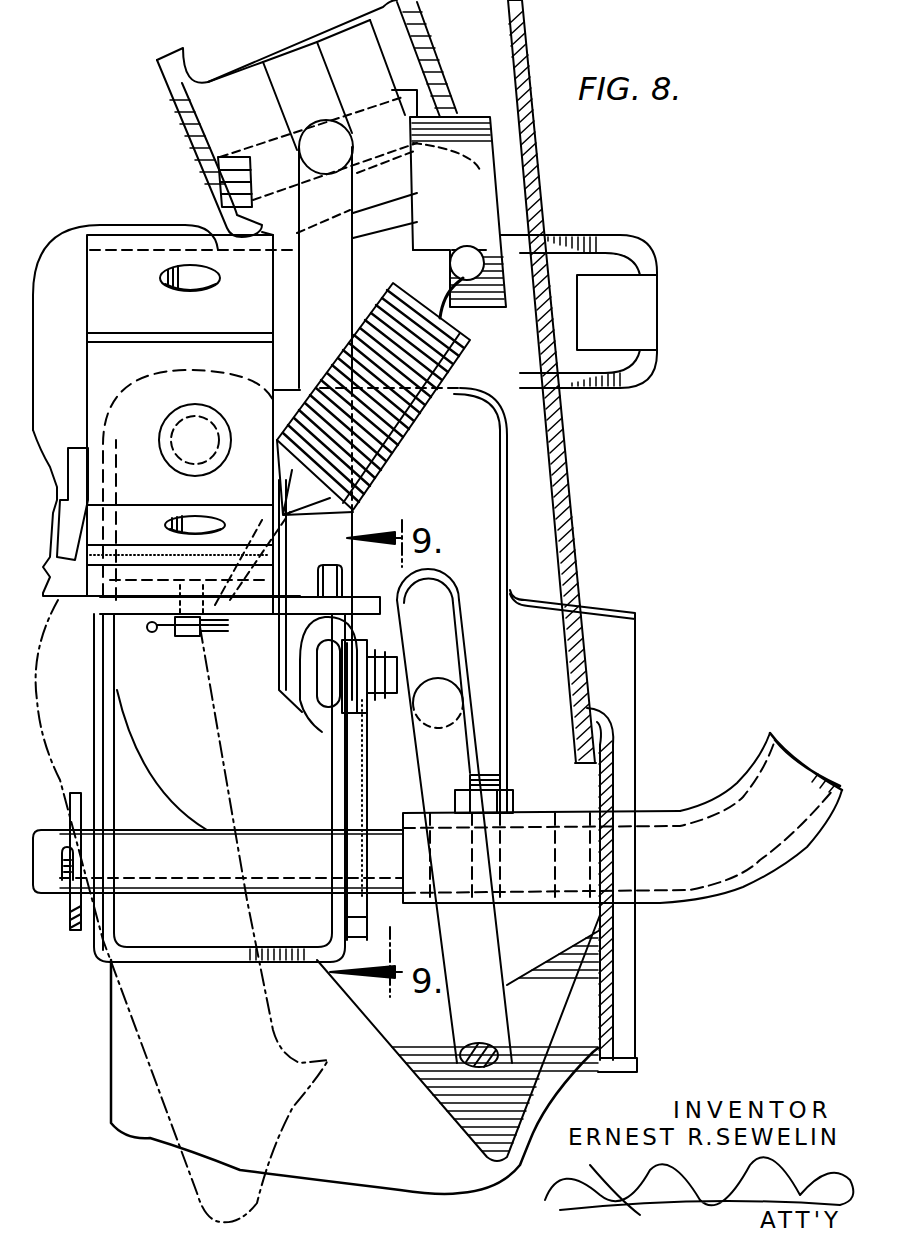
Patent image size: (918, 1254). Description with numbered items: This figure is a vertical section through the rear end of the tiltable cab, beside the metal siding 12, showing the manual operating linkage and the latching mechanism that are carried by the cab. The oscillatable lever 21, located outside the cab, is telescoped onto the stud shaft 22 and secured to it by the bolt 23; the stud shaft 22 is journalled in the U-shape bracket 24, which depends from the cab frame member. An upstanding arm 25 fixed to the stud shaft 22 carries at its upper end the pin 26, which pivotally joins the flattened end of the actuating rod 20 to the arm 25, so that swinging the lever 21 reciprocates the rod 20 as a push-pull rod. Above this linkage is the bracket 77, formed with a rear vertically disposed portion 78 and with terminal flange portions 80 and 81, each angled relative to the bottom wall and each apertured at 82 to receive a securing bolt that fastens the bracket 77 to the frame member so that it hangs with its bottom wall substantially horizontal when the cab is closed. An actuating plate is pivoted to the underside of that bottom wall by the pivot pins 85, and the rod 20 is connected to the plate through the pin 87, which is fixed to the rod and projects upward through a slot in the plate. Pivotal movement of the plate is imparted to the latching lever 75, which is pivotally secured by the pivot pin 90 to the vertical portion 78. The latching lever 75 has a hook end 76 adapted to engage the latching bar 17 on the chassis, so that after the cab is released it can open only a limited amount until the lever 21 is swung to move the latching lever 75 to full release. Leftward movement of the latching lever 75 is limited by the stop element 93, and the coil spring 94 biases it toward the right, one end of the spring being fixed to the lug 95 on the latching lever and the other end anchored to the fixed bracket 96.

The metal siding 12 is at (577, 563).
The latching bar 17 is at (457, 752).
The actuating rod 20 is at (316, 259).
The oscillatable lever 21 is at (777, 823).
The stud shaft 22 is at (182, 863).
The bolt 23 is at (500, 847).
The U-shape bracket 24 is at (230, 955).
The upstanding arm 25 is at (353, 753).
The pin 26 is at (307, 713).
The latching lever 75 is at (406, 1061).
The hook end 76 is at (600, 997).
The bracket 77 is at (142, 585).
The rear vertically disposed portion 78 is at (120, 370).
The terminal flange portion 80 is at (135, 525).
The terminal flange portion 81 is at (118, 290).
The aperture 82 is at (188, 268).
The pivot pin 85 is at (163, 634).
The pin 87 is at (310, 572).
The pivot pin 90 is at (213, 415).
The stop element 93 is at (73, 463).
The coil spring 94 is at (397, 413).
The lug 95 is at (340, 492).
The fixed bracket 96 is at (483, 190).